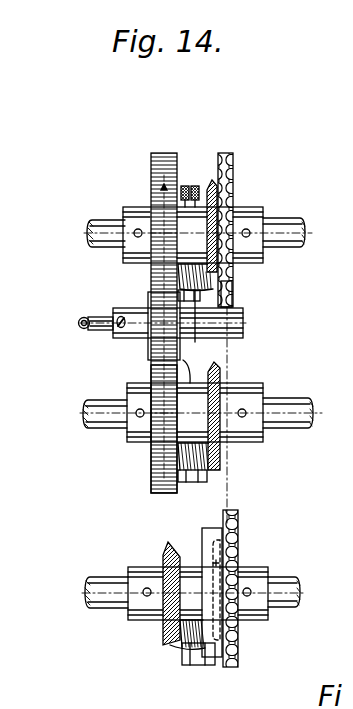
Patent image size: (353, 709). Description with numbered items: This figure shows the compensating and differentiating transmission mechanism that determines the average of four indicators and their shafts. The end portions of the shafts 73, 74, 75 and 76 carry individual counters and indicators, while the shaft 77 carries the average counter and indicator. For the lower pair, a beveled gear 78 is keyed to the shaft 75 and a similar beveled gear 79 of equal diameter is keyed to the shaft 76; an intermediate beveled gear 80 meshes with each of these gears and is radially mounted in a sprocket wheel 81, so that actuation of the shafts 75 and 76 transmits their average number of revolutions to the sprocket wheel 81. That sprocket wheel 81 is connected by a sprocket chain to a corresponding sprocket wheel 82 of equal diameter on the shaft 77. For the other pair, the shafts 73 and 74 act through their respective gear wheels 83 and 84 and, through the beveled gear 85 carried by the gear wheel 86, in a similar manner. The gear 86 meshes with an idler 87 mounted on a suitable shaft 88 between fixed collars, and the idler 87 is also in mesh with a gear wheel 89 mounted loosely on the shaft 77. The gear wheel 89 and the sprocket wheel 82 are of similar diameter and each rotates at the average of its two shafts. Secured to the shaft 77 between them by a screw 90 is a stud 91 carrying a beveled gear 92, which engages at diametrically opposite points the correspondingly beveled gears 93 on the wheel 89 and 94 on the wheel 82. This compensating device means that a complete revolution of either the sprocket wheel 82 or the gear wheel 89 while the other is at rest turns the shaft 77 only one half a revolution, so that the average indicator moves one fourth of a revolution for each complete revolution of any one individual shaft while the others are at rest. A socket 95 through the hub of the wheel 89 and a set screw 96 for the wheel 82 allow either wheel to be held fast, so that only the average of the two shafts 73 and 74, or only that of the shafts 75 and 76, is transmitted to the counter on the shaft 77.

The shaft 73 is at (83, 406).
The shaft 74 is at (316, 413).
The shaft 75 is at (92, 608).
The shaft 76 is at (296, 605).
The shaft 77 is at (303, 226).
The beveled gear 78 is at (163, 550).
The beveled gear 79 is at (237, 560).
The intermediate beveled gear 80 is at (176, 650).
The sprocket wheel 81 is at (222, 535).
The sprocket wheel 82 is at (235, 170).
The gear wheel 83 is at (152, 448).
The gear wheel 84 is at (220, 368).
The beveled gear 85 is at (193, 467).
The gear wheel 86 is at (155, 480).
The idler 87 is at (163, 320).
The shaft 88 is at (238, 317).
The gear wheel 89 is at (88, 226).
The screw 90 is at (195, 185).
The stud 91 is at (195, 342).
The beveled gear 92 is at (233, 296).
The beveled gear 93 is at (153, 270).
The beveled gear 94 is at (235, 266).
The socket 95 is at (127, 246).
The set screw 96 is at (248, 229).